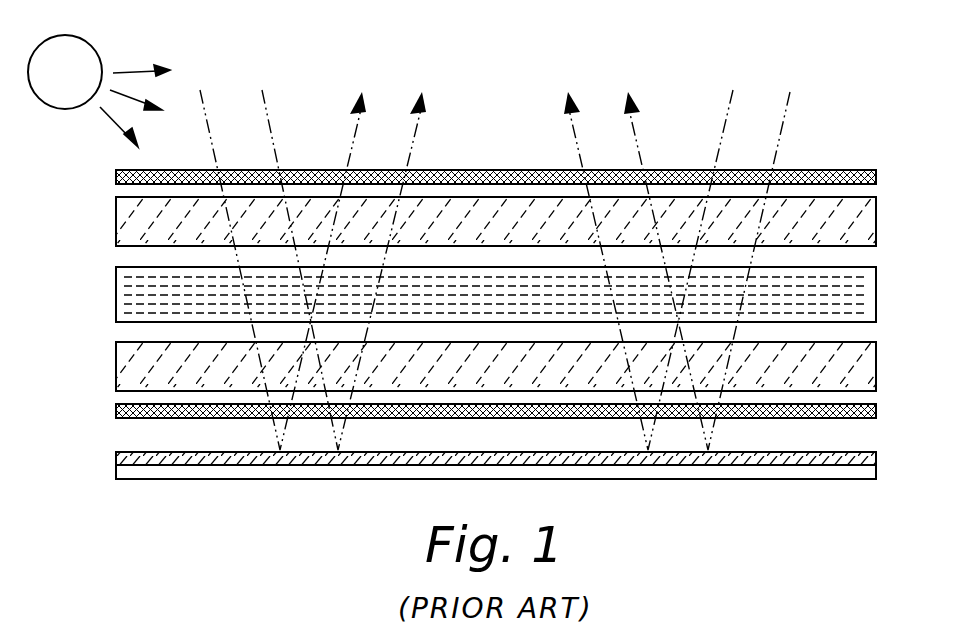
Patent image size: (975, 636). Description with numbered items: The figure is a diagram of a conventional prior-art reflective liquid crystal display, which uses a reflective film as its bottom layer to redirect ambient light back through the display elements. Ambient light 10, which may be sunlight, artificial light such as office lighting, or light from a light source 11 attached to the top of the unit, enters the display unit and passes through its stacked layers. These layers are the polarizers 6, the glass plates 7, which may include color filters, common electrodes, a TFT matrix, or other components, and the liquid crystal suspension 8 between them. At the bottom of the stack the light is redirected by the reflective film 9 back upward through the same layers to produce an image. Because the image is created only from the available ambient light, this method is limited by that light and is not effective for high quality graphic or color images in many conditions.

The polarizers 6 is at (116, 178).
The glass plates 7 is at (116, 222).
The liquid crystal suspension 8 is at (116, 293).
The reflective film 9 is at (116, 456).
The ambient light 10 is at (782, 140).
The light source 11 is at (78, 37).